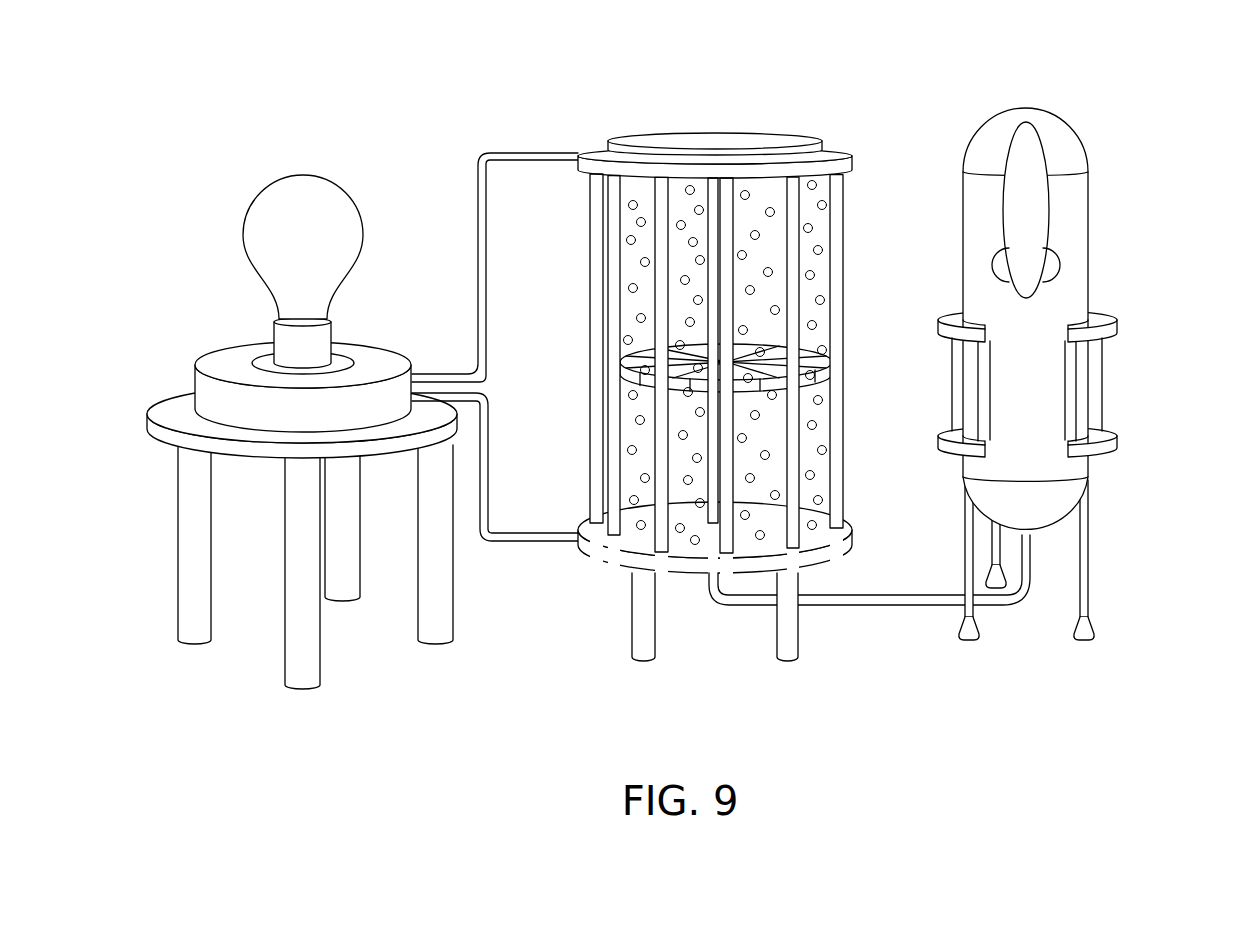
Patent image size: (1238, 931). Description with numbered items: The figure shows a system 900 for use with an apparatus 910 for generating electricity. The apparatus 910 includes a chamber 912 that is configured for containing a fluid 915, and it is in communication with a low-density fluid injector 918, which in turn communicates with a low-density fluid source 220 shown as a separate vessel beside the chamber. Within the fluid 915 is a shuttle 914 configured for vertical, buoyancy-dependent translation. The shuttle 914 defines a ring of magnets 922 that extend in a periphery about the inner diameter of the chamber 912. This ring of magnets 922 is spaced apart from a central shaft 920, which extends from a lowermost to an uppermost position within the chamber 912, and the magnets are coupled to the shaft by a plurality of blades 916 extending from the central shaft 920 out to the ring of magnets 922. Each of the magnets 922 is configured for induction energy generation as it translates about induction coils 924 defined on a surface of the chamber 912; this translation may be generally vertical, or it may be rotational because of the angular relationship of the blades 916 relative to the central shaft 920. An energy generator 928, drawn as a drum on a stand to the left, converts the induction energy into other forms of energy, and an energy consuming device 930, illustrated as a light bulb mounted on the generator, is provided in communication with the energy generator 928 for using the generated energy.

The system 900 is at (470, 670).
The apparatus 910 is at (810, 629).
The chamber 912 is at (853, 165).
The shuttle 914 is at (683, 390).
The fluid 915 is at (640, 490).
The blades 916 is at (693, 347).
The low-density fluid injector 918 is at (730, 606).
The central shaft 920 is at (692, 160).
The ring of magnets 922 is at (628, 378).
The induction coils 924 is at (613, 418).
The energy generator 928 is at (203, 388).
The energy consuming device 930 is at (357, 360).
The low-density fluid source 220 is at (1055, 498).